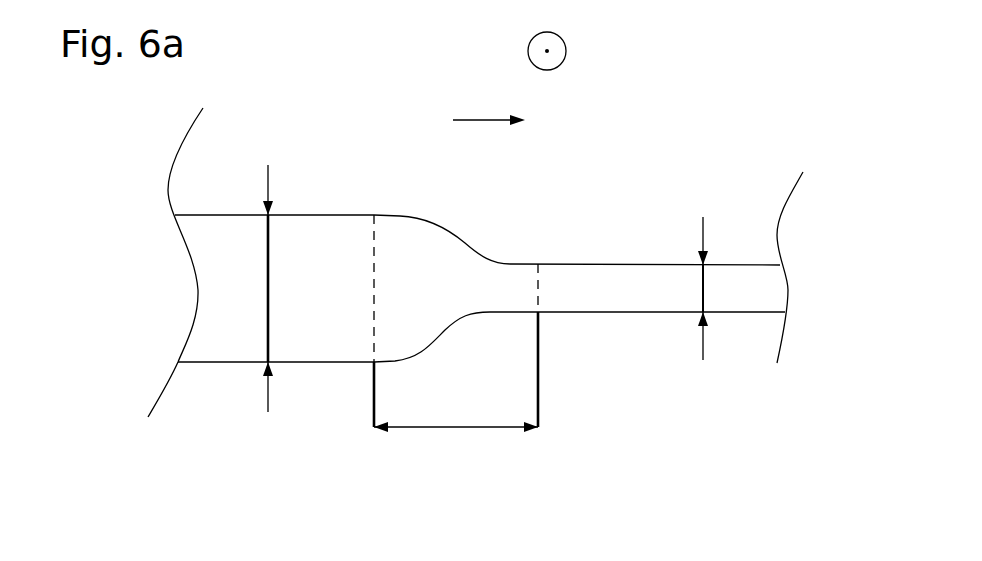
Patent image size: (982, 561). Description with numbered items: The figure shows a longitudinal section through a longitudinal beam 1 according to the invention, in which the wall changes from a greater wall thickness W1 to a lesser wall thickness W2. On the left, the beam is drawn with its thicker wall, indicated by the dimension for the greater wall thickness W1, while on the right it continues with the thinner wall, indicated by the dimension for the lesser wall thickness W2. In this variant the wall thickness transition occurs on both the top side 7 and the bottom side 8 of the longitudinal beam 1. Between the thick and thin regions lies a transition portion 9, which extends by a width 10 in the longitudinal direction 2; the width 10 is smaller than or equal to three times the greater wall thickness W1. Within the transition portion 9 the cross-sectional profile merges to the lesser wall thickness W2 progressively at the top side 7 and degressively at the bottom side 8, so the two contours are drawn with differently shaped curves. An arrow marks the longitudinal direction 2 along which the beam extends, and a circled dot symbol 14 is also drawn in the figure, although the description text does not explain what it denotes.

The longitudinal beam 1 is at (765, 112).
The longitudinal direction 2 is at (489, 106).
The top side 7 is at (322, 213).
The bottom side 8 is at (322, 362).
The transition portion 9 is at (457, 277).
The width 10 is at (456, 427).
The bending axis 14 is at (560, 37).
The greater wall thickness W1 is at (260, 308).
The lesser wall thickness W2 is at (704, 309).